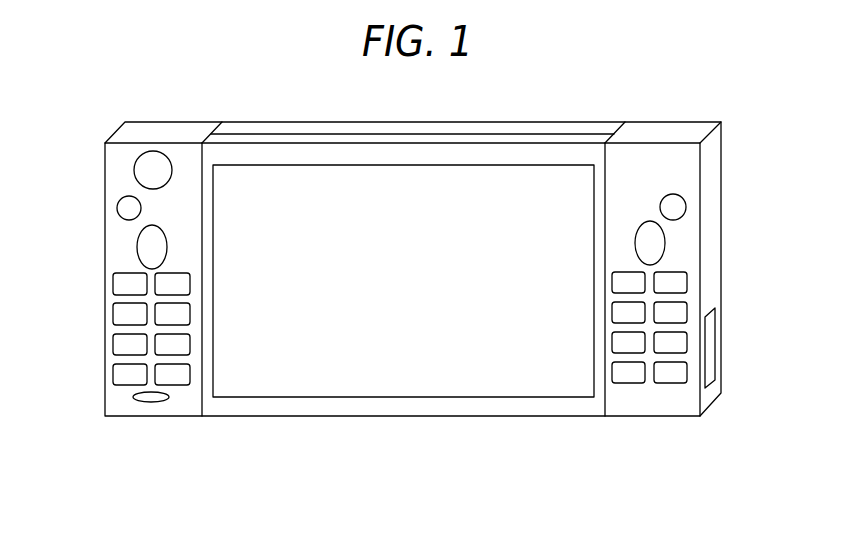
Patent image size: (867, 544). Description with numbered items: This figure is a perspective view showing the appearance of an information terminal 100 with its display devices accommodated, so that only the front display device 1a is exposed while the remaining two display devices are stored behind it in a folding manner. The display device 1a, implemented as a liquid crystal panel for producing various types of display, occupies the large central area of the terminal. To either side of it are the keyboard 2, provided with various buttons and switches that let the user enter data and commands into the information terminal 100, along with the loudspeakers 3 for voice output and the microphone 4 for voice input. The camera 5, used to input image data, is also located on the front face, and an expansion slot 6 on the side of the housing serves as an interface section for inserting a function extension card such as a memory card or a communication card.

The information terminal 100 is at (713, 92).
The display device 1a is at (434, 397).
The keyboard 2 is at (687, 282).
The loudspeakers 3 is at (686, 207).
The microphone 4 is at (151, 400).
The camera 5 is at (134, 170).
The expansion slot 6 is at (708, 348).